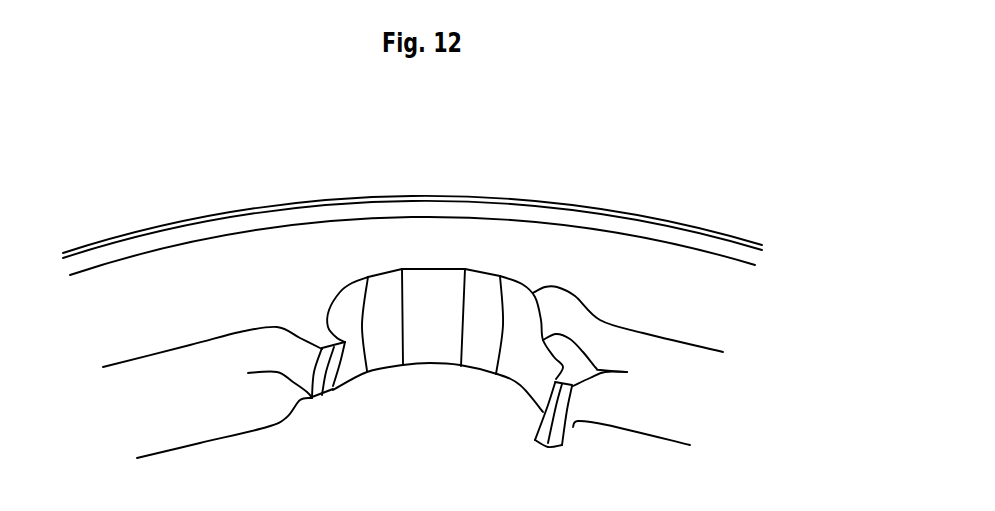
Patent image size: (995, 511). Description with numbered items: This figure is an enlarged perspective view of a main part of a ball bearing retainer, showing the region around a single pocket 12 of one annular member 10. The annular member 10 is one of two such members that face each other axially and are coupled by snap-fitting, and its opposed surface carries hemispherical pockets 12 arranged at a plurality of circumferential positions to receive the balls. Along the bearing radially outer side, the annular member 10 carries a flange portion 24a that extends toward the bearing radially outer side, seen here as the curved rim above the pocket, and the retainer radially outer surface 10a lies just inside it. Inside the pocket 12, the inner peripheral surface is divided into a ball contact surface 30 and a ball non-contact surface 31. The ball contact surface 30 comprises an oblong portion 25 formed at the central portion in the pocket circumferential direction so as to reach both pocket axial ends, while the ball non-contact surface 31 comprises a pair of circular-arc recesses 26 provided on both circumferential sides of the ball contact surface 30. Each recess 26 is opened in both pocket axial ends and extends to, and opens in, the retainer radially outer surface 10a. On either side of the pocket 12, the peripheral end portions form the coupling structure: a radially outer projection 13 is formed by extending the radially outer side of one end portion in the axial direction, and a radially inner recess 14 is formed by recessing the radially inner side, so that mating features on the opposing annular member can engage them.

The annular member 10 is at (412, 203).
The retainer radially outer surface 10a is at (693, 272).
The flange portion 24a is at (553, 217).
The pocket 12 is at (435, 277).
The circular-arc recess 26 is at (387, 283).
The ball contact surface 30 is at (438, 347).
The ball non-contact surface 31 is at (380, 350).
The oblong portion 25 is at (417, 353).
The radially inner recess 14 is at (337, 393).
The radially outer projection 13 is at (305, 382).